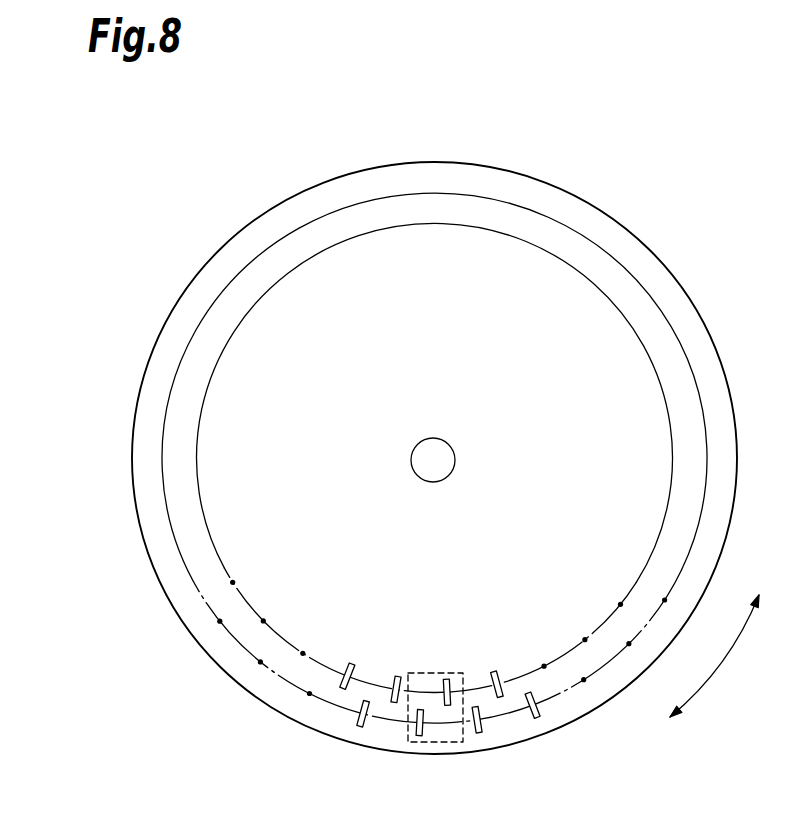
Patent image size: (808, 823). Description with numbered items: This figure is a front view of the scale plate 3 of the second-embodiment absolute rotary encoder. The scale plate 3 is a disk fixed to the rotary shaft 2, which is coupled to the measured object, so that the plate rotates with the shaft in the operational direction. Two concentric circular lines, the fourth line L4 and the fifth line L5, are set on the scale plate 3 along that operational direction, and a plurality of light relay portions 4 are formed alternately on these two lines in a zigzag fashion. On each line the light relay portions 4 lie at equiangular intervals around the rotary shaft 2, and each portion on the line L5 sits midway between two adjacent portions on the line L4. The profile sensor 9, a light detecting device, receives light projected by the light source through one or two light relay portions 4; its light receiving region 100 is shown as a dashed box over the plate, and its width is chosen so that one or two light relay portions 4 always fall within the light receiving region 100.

The rotary shaft 2 is at (451, 449).
The scale plate 3 is at (227, 240).
The light relay portions 4 is at (450, 706).
The profile sensor 9 is at (463, 742).
The light receiving region 100 is at (479, 748).
The line (fourth line) L4 is at (283, 638).
The line (fifth line) L5 is at (203, 598).